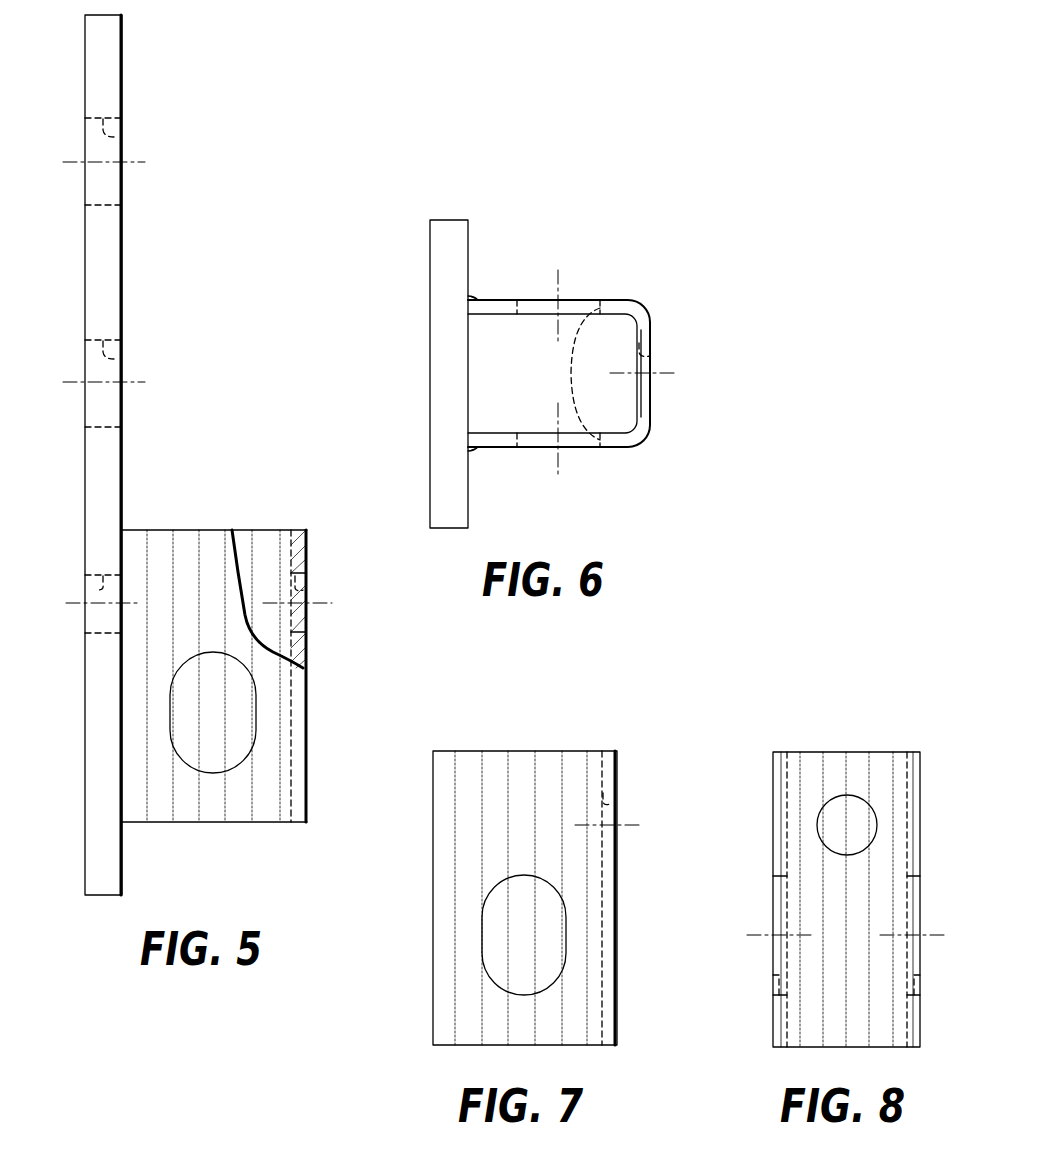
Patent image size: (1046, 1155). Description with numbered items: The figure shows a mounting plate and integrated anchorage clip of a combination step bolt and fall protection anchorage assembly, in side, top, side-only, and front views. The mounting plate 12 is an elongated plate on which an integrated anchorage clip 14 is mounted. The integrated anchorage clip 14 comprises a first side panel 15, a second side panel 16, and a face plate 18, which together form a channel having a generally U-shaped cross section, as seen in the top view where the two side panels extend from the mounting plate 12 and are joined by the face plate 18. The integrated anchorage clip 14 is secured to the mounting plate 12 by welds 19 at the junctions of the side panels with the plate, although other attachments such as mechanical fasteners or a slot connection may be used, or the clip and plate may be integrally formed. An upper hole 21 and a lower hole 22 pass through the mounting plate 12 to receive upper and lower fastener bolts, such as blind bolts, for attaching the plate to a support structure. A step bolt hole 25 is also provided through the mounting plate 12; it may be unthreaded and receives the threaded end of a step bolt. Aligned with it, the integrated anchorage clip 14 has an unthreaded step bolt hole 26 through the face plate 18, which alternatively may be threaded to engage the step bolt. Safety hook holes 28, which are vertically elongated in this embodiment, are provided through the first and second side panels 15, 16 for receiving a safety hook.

In FIG. 5, the mounting plate 12 is at (106, 74).
In FIG. 6, the mounting plate 12 is at (455, 238).
In FIG. 5, the integrated anchorage clip 14 is at (242, 666).
In FIG. 6, the integrated anchorage clip 14 is at (594, 353).
In FIG. 7, the integrated anchorage clip 14 is at (554, 861).
In FIG. 8, the integrated anchorage clip 14 is at (837, 853).
In FIG. 5, the first side panel 15 is at (189, 545).
In FIG. 6, the first side panel 15 is at (613, 446).
In FIG. 7, the first side panel 15 is at (493, 778).
In FIG. 8, the first side panel 15 is at (772, 825).
In FIG. 5, the second side panel 16 is at (268, 545).
In FIG. 6, the second side panel 16 is at (612, 303).
In FIG. 8, the second side panel 16 is at (922, 825).
In FIG. 5, the face plate 18 is at (297, 540).
In FIG. 6, the face plate 18 is at (652, 413).
In FIG. 7, the face plate 18 is at (620, 945).
In FIG. 8, the face plate 18 is at (815, 770).
In FIG. 6, the welds 19 is at (470, 295).
In FIG. 5, the upper hole 21 is at (116, 137).
In FIG. 5, the lower hole 22 is at (116, 359).
In FIG. 5, the step bolt hole 25 is at (96, 590).
In FIG. 5, the step bolt hole 26 is at (303, 587).
In FIG. 6, the step bolt hole 26 is at (651, 355).
In FIG. 7, the step bolt hole 26 is at (611, 801).
In FIG. 8, the step bolt hole 26 is at (855, 815).
In FIG. 5, the safety hook holes 28 is at (171, 723).
In FIG. 6, the safety hook holes 28 is at (581, 374).
In FIG. 7, the safety hook holes 28 is at (484, 935).
In FIG. 8, the safety hook holes 28 is at (773, 978).